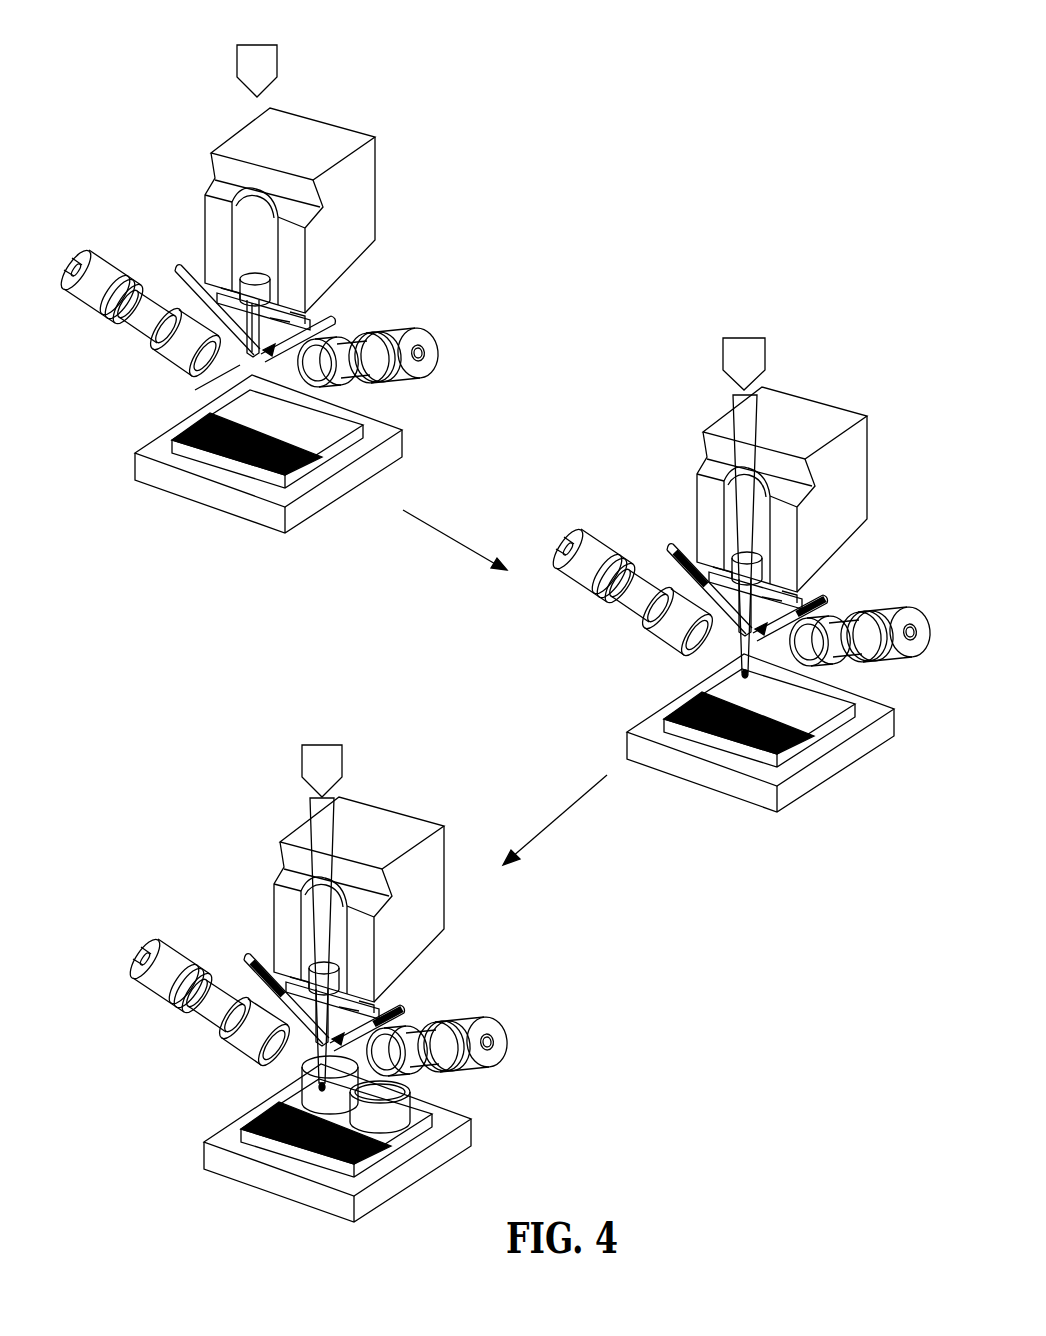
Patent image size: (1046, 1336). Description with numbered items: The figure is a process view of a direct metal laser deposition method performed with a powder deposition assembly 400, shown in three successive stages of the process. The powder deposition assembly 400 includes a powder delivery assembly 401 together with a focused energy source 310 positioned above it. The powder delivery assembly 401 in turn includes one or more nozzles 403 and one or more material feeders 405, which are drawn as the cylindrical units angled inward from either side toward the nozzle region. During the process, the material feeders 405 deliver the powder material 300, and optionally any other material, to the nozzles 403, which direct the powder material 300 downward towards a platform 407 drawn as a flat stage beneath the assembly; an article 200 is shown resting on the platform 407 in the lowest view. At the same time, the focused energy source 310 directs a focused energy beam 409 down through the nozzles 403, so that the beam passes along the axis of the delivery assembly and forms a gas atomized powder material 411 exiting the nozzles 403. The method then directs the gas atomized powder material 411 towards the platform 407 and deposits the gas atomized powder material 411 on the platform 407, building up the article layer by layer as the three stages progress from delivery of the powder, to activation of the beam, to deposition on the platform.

The powder deposition assembly 400 is at (152, 80).
The focused energy source 310 is at (262, 65).
The focused energy beam 409 is at (740, 427).
The platform 407 is at (185, 486).
The sample slide 200 is at (262, 1136).
The powder material 300 is at (675, 548).
The material feeders 405 is at (185, 283).
The powder delivery assembly 401 is at (300, 350).
The nozzles 403 is at (195, 390).
The gas atomized powder material 411 is at (720, 650).